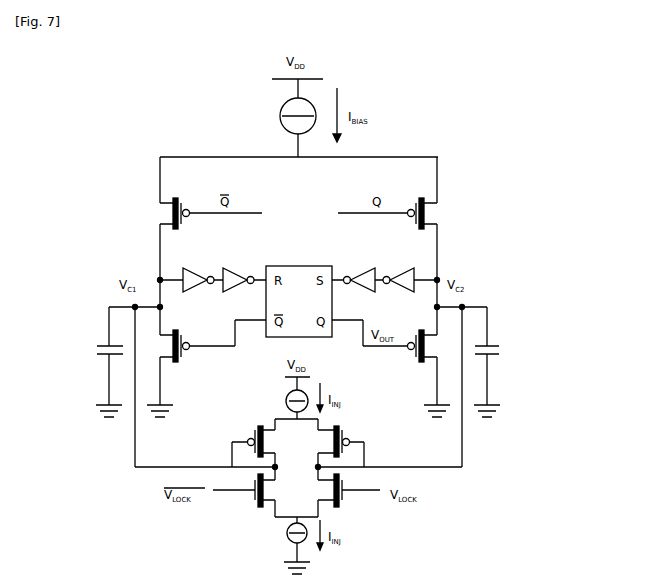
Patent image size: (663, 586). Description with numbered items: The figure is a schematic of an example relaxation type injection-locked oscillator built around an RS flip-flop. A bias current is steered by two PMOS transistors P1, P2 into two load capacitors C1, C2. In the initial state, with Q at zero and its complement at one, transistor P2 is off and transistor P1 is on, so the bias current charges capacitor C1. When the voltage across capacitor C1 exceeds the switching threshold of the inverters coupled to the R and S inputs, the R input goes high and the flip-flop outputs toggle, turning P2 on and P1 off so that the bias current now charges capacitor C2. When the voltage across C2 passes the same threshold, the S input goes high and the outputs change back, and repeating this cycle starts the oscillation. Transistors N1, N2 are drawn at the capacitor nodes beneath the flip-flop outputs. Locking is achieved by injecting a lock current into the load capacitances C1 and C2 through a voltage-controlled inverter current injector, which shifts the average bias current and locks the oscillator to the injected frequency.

The transistor P1 is at (196, 213).
The transistor P2 is at (399, 213).
The first NMOS transistor N1 is at (182, 356).
The second NMOS transistor N2 is at (414, 356).
The capacitor C1 is at (101, 362).
The capacitor C2 is at (498, 362).